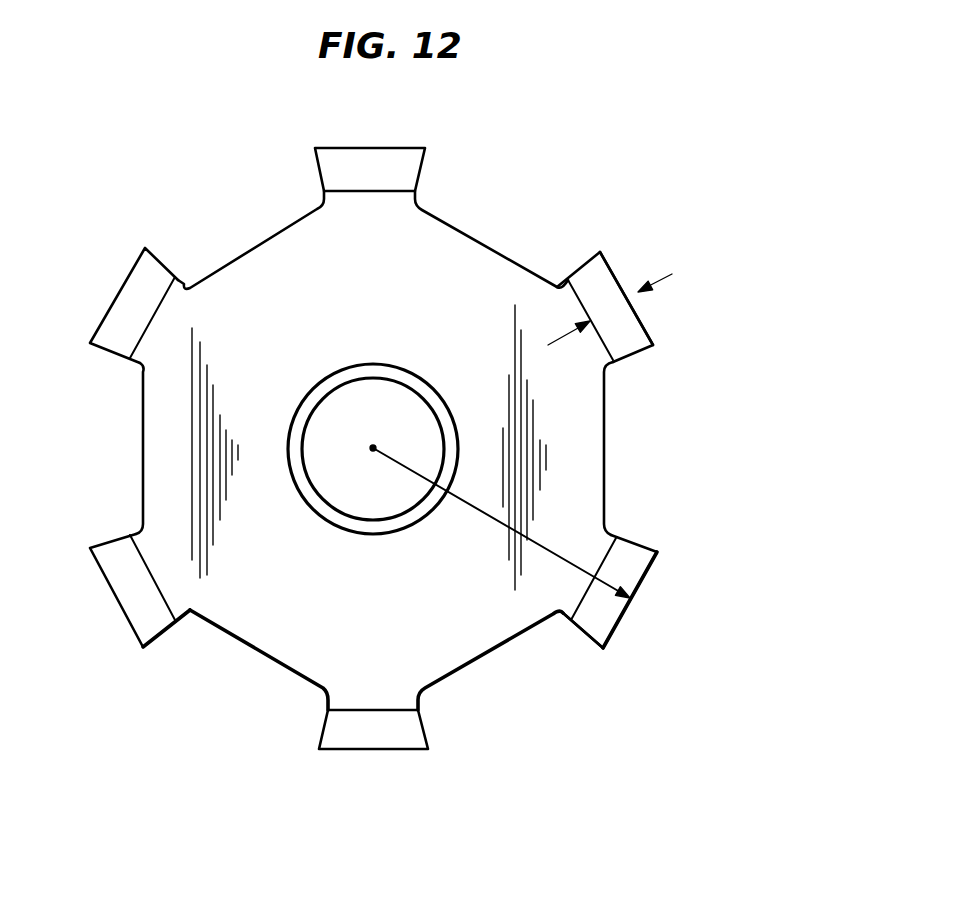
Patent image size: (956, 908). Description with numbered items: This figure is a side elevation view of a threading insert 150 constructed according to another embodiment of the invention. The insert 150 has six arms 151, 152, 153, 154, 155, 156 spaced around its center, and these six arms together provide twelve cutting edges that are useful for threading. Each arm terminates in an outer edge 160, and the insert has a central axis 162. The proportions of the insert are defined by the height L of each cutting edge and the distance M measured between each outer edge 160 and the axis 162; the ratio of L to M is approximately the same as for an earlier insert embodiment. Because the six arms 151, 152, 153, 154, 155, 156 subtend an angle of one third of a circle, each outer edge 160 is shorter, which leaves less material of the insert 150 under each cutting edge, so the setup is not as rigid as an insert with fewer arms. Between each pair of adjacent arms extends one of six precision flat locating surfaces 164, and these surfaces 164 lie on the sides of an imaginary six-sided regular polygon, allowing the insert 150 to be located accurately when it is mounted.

The insert 150 is at (468, 228).
The arm 151 is at (125, 278).
The arm 152 is at (413, 149).
The arm 153 is at (653, 337).
The arm 154 is at (647, 570).
The arm 155 is at (400, 750).
The arm 156 is at (143, 645).
The outer edge 160 is at (613, 635).
The axis 162 is at (372, 447).
The precision flat locating surface 164 is at (525, 268).
The height of cutting edge L is at (607, 308).
The distance between outer edge and axis M is at (553, 553).